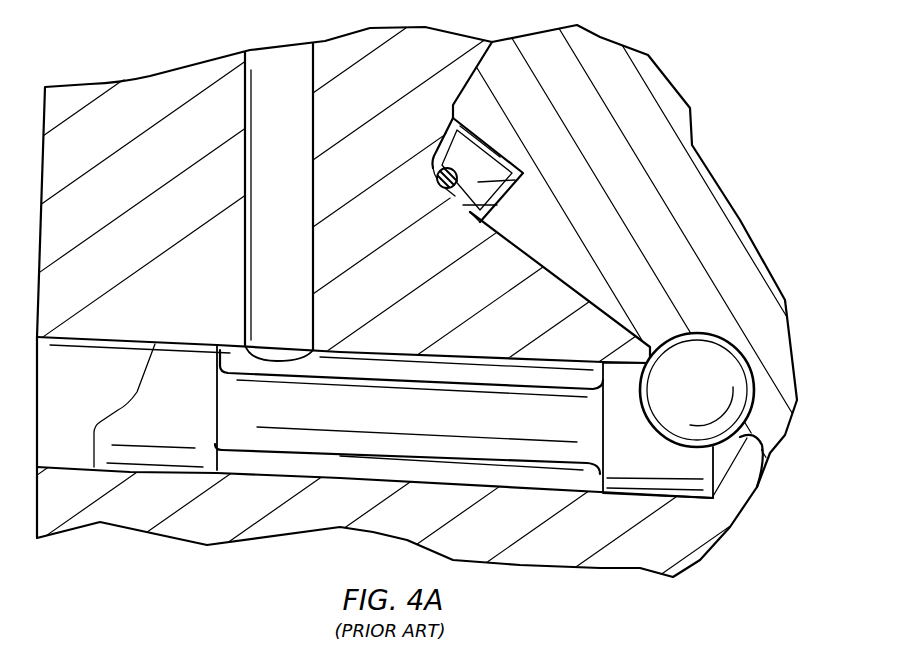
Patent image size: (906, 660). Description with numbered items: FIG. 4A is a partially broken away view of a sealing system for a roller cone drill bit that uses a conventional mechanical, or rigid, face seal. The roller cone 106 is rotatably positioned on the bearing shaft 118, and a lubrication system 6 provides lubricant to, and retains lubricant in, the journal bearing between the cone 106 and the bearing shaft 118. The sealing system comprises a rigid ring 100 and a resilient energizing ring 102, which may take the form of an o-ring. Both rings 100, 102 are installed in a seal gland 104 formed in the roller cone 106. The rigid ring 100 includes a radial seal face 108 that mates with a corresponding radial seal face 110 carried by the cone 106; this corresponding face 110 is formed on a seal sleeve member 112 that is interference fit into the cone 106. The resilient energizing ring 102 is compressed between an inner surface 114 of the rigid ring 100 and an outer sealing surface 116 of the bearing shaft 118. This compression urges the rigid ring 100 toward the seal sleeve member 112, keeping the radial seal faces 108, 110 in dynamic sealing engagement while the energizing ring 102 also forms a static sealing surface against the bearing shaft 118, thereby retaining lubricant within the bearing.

The lubrication system 6 is at (277, 346).
The rigid ring 100 is at (447, 152).
The resilient energizing ring 102 is at (432, 175).
The seal gland 104 is at (541, 128).
The roller cone 106 is at (611, 42).
The radial seal face 108 is at (488, 172).
The corresponding radial seal face 110 is at (482, 157).
The seal sleeve member 112 is at (507, 190).
The inner surface 114 is at (470, 217).
The outer sealing surface 116 is at (448, 188).
The bearing shaft 118 is at (441, 325).